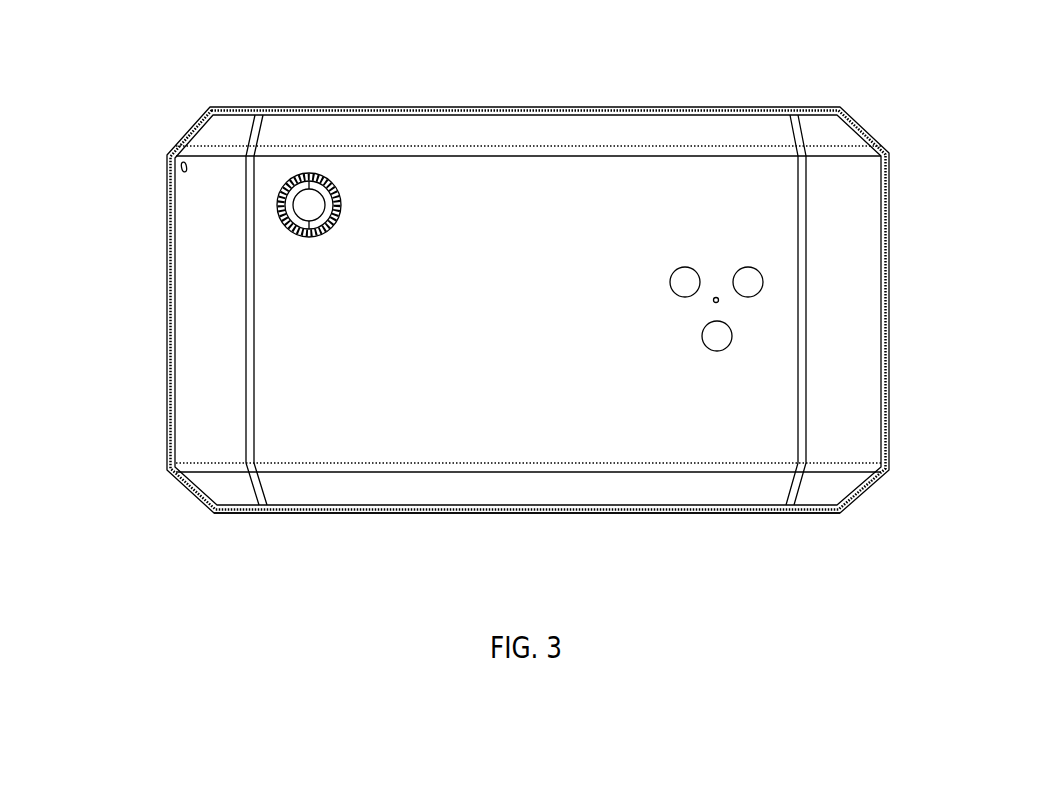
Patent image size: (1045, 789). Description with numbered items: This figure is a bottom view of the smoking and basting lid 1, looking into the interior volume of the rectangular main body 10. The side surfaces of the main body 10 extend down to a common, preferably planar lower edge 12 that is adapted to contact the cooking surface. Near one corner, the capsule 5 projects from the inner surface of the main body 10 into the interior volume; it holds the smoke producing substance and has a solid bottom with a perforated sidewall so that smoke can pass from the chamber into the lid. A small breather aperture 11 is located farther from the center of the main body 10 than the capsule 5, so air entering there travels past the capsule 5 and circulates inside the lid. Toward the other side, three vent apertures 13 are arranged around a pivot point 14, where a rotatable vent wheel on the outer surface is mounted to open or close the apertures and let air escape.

The smoking and basting lid 1 is at (668, 433).
The capsule 5 is at (310, 176).
The main body 10 is at (158, 285).
The breather aperture 11 is at (169, 157).
The lower edge 12 is at (448, 512).
The vent apertures 13 is at (750, 283).
The pivot point 14 is at (722, 302).